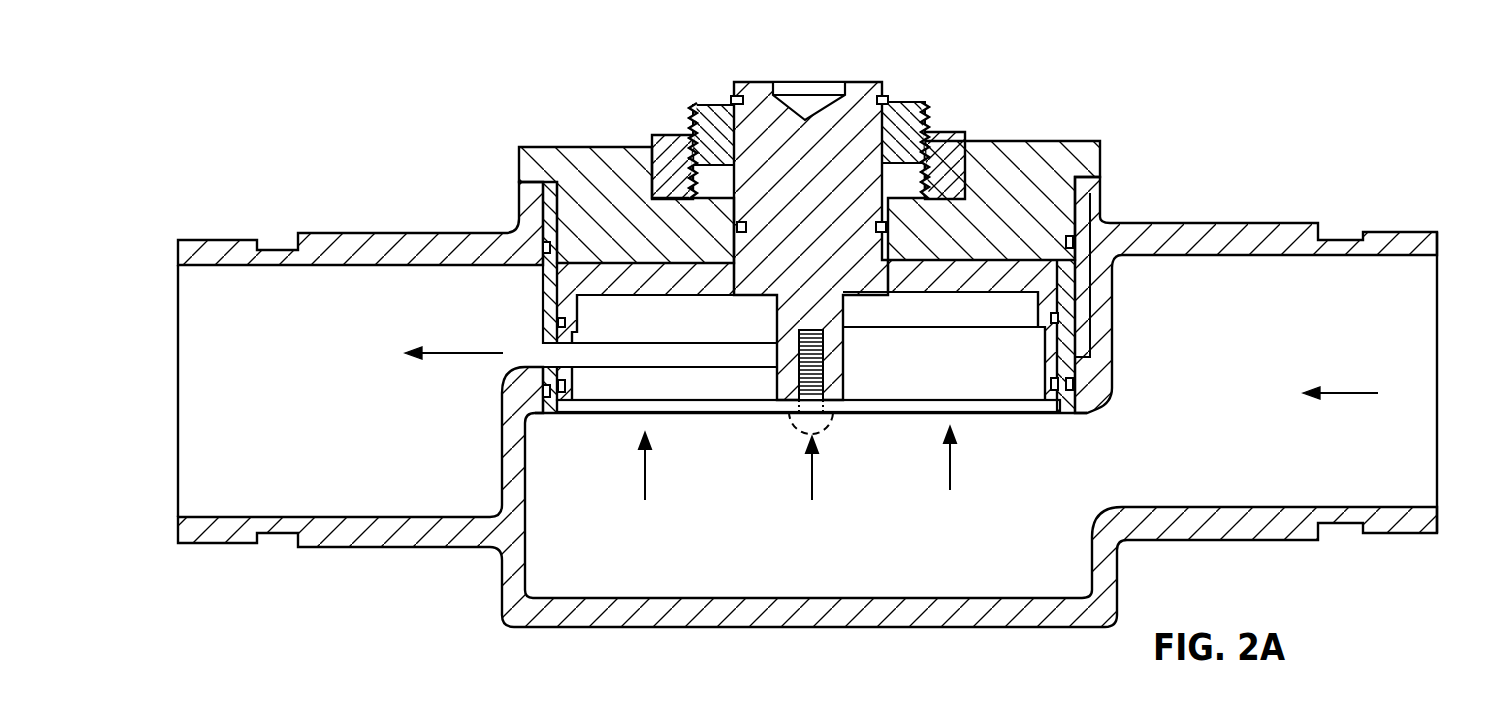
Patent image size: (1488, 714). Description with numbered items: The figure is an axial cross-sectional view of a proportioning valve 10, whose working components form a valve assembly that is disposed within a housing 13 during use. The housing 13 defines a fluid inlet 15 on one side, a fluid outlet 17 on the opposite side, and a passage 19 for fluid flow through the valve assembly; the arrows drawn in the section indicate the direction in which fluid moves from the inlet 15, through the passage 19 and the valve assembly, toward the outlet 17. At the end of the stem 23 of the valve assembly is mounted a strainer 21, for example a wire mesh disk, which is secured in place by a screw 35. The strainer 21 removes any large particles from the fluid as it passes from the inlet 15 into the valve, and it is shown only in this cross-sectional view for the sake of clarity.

The proportioning valve 10 is at (1085, 73).
The housing 13 is at (1218, 230).
The fluid inlet 15 is at (1448, 319).
The fluid outlet 17 is at (173, 360).
The passage 19 is at (1197, 337).
The strainer 21 is at (708, 405).
The stem 23 is at (830, 358).
The screw 35 is at (828, 422).